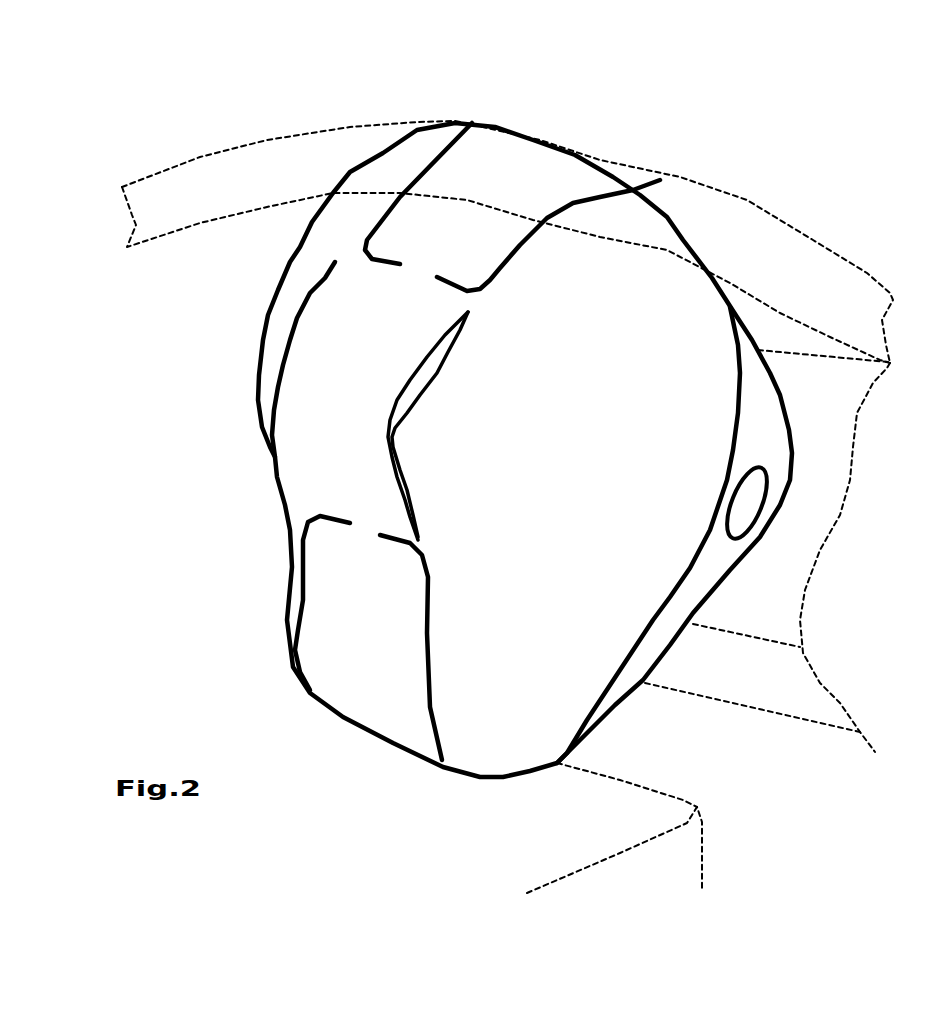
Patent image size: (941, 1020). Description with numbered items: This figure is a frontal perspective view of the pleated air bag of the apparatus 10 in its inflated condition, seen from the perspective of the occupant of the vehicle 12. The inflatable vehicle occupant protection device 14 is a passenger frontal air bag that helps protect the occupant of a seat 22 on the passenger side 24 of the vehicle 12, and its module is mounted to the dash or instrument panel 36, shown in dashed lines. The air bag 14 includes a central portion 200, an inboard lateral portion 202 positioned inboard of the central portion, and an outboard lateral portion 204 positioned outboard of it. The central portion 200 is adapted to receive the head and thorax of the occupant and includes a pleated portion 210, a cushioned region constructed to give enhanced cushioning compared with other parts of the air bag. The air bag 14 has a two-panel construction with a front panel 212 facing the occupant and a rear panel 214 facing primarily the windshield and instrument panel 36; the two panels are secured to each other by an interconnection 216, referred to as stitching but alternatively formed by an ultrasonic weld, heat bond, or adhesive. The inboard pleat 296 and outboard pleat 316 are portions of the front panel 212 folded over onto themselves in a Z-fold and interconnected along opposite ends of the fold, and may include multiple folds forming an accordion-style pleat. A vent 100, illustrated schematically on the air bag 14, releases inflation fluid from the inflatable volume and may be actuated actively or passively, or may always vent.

The apparatus 10 is at (402, 102).
The vehicle 12 is at (738, 187).
The inflatable vehicle occupant protection device 14 is at (347, 120).
The seat 22 is at (633, 813).
The passenger side 24 is at (247, 243).
The instrument panel 36 is at (815, 478).
The vent 100 is at (760, 517).
The central portion 200 is at (310, 387).
The inboard lateral portion 202 is at (290, 293).
The outboard lateral portion 204 is at (647, 320).
The pleated portion 210 is at (302, 425).
The front panel 212 is at (308, 473).
The rear panel 214 is at (707, 558).
The interconnection 216 is at (573, 203).
The inboard pleat 296 is at (290, 342).
The outboard pleat 316 is at (415, 387).